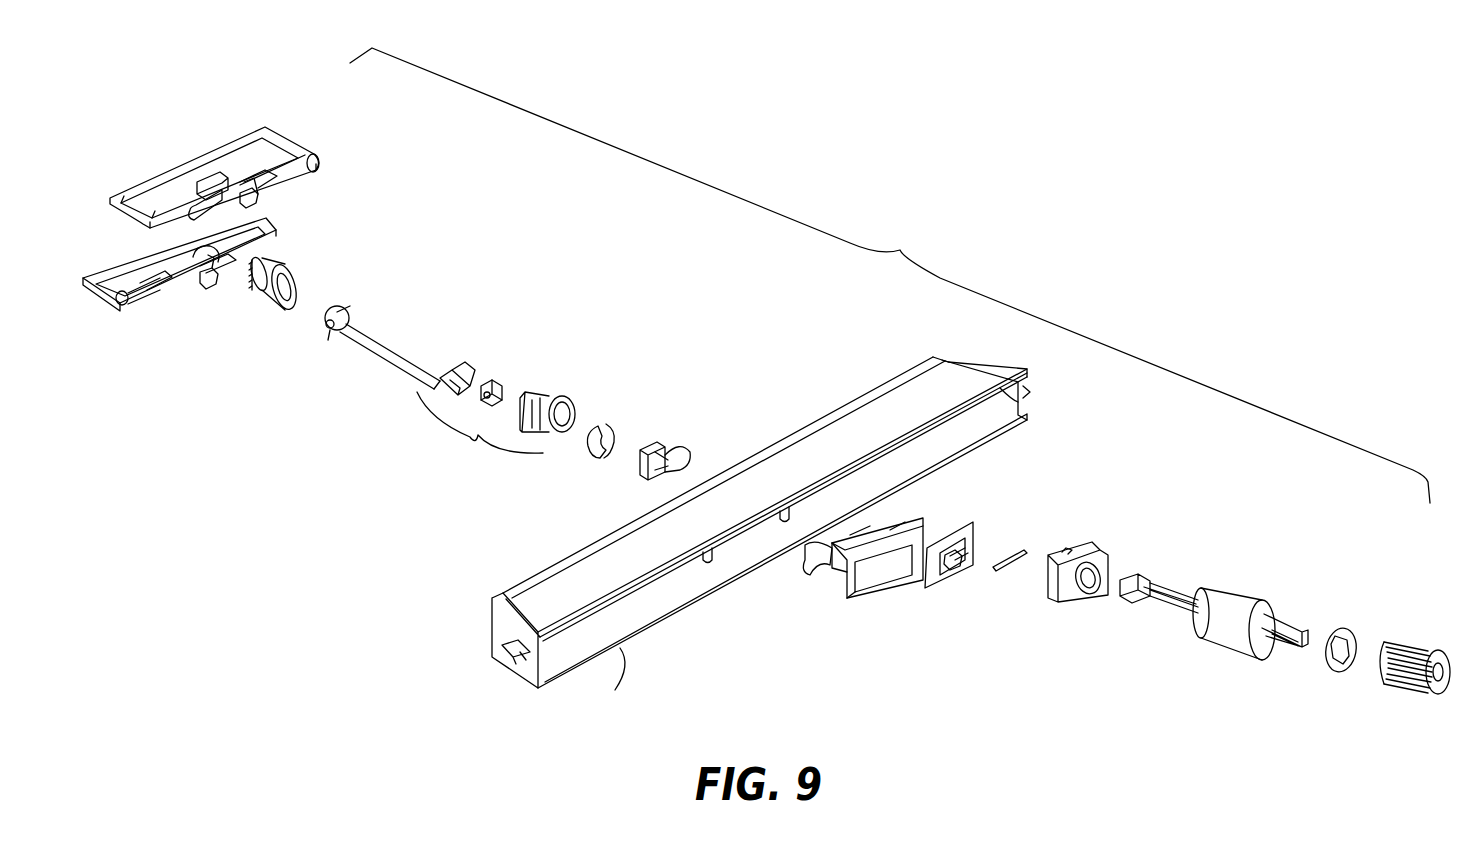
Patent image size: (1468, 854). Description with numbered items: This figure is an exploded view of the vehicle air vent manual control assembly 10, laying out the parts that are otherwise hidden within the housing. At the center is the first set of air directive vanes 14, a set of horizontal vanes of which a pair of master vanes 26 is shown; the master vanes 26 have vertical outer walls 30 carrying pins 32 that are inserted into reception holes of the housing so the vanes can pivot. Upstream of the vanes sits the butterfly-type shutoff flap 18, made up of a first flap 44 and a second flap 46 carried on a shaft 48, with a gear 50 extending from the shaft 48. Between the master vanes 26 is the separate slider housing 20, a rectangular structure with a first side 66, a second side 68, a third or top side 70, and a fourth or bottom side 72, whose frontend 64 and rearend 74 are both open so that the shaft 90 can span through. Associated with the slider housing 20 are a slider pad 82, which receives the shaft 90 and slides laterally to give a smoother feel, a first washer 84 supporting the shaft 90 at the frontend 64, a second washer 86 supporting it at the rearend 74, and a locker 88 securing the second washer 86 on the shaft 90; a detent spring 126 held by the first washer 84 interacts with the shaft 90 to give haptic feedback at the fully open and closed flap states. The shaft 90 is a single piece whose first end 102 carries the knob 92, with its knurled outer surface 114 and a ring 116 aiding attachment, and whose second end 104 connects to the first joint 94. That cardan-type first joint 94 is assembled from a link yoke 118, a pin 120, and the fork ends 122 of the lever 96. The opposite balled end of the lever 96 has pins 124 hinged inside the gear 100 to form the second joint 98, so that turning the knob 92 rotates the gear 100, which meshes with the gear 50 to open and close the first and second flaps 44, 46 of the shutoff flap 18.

The vehicle air vent manual control assembly 10 is at (890, 275).
The first set of air directive vanes 14 is at (764, 545).
The shutoff flap 18 is at (208, 214).
The slider housing 20 is at (907, 558).
The master vanes 26 is at (618, 660).
The vertical outer walls 30 is at (1010, 398).
The pins 32 is at (1030, 392).
The first flap 44 is at (242, 160).
The second flap 46 is at (140, 268).
The shaft 48 is at (305, 158).
The gear 50 is at (260, 197).
The frontend 64 is at (848, 564).
The first side 66 is at (822, 575).
The second side 68 is at (945, 522).
The third or top side 70 is at (892, 528).
The fourth or bottom side 72 is at (880, 582).
The rearend 74 is at (848, 532).
The slider pad 82 is at (980, 546).
The first washer 84 is at (1106, 556).
The second washer 86 is at (675, 442).
The locker 88 is at (602, 420).
The shaft 90 is at (1225, 605).
The knob 92 is at (1415, 657).
The first joint 94 is at (480, 433).
The lever 96 is at (410, 324).
The second joint 98 is at (328, 306).
The gear 100 is at (290, 270).
The first end 102 is at (1290, 630).
The second end 104 is at (1125, 598).
The knurled outer surface 114 is at (1408, 650).
The ring 116 is at (1334, 672).
The link yoke 118 is at (560, 396).
The pin 120 is at (500, 384).
The fork ends 122 is at (462, 378).
The pins 124 is at (350, 312).
The detent spring 126 is at (1002, 572).